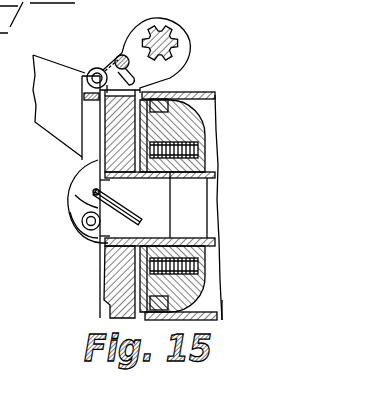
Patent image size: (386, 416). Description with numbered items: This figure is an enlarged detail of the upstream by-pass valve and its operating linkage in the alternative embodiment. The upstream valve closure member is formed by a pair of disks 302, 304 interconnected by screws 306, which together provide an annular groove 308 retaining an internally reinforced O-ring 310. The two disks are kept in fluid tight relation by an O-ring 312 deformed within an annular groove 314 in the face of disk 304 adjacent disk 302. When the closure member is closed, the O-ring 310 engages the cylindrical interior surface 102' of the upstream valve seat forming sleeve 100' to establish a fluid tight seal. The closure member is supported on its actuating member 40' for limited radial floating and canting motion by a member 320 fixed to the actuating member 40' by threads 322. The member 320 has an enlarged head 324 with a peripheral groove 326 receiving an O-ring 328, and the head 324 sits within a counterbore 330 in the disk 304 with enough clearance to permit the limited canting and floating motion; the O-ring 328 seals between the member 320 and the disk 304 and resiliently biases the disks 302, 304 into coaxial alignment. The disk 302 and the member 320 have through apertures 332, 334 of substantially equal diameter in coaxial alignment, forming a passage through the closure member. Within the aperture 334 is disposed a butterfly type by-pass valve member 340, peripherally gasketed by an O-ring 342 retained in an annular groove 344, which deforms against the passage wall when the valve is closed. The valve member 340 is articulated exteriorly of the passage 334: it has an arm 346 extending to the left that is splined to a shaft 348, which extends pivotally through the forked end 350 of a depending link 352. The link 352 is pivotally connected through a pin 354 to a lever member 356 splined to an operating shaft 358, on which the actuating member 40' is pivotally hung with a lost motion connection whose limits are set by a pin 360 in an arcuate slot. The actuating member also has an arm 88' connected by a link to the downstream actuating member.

The arm 88' is at (46, 102).
The pin 354 is at (88, 70).
The valve actuating member 40' is at (78, 94).
The link 352 is at (90, 112).
The lever member 356 is at (140, 30).
The operating shaft 358 is at (160, 26).
The pin 360 is at (128, 46).
The upstream valve seat forming sleeve 100' is at (236, 197).
The annular groove 308 is at (152, 98).
The O-ring 310 is at (158, 98).
The O-ring 312 is at (200, 110).
The annular groove 314 is at (200, 128).
The threads 322 is at (104, 160).
The enlarged head 324 is at (210, 162).
The through aperture 332 is at (210, 178).
The member 320 is at (153, 197).
The counterbore 330 is at (153, 224).
The through aperture 334 is at (168, 246).
The O-ring 342 is at (86, 188).
The annular groove 344 is at (76, 198).
The forked end 350 is at (70, 212).
The shaft 348 is at (82, 226).
The by-pass valve member 340 is at (108, 198).
The arm 346 is at (118, 207).
The disk 304 is at (104, 298).
The peripheral groove 326 is at (210, 240).
The O-ring 328 is at (210, 252).
The screws 306 is at (210, 270).
The disk 302 is at (212, 294).
The cylindrical interior surface 102' is at (235, 309).